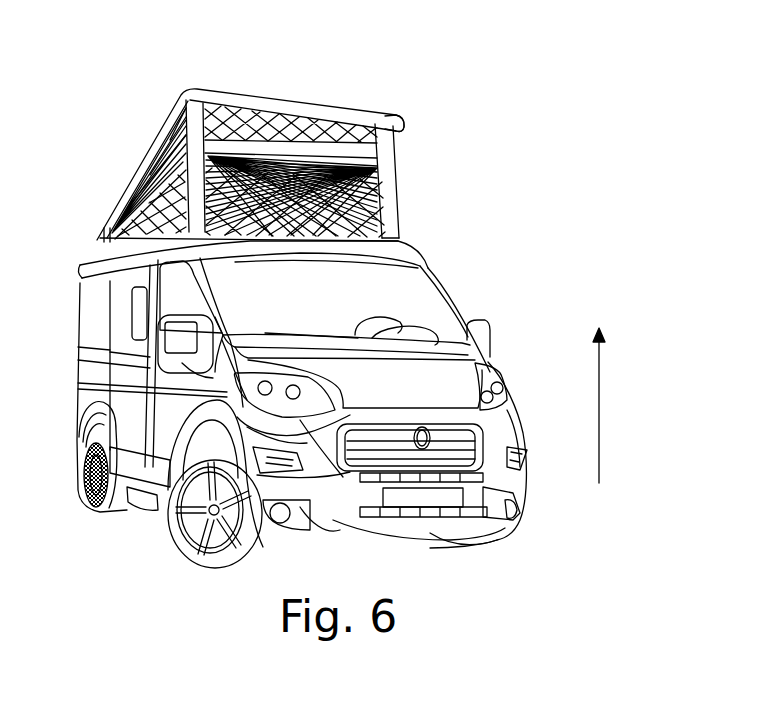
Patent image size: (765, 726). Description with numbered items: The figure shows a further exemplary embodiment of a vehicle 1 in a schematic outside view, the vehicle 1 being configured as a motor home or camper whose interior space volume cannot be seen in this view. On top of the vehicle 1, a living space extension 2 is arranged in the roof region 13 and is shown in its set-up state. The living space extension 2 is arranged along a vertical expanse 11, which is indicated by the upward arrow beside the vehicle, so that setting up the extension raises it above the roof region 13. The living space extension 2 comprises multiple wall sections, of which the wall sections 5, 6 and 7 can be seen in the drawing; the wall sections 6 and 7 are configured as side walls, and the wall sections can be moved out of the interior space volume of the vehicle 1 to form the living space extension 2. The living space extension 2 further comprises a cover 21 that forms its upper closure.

The vehicle 1 is at (140, 110).
The living space extension 2 is at (298, 192).
The wall section 5 is at (318, 200).
The wall section 6 is at (145, 200).
The wall section 7 is at (403, 163).
The vertical expanse 11 is at (600, 405).
The roof region 13 is at (403, 233).
The cover 21 is at (395, 122).